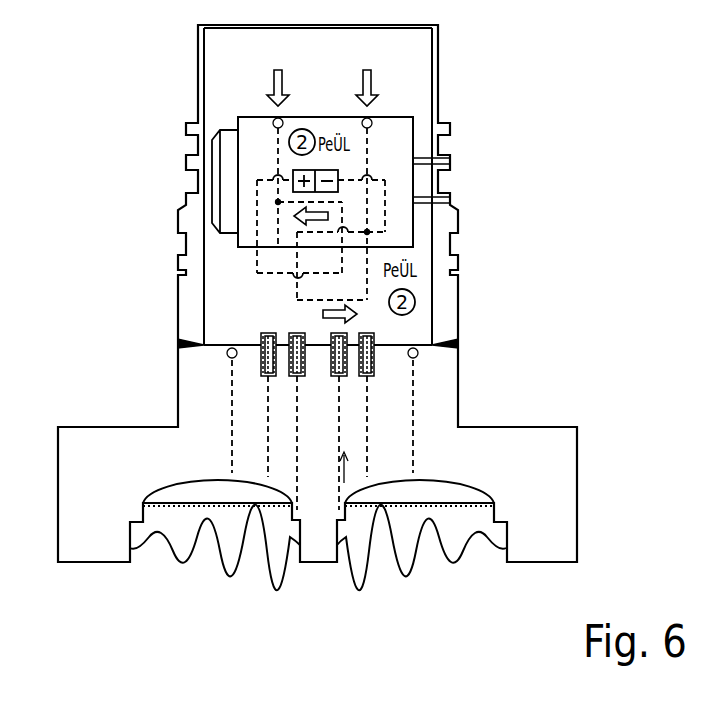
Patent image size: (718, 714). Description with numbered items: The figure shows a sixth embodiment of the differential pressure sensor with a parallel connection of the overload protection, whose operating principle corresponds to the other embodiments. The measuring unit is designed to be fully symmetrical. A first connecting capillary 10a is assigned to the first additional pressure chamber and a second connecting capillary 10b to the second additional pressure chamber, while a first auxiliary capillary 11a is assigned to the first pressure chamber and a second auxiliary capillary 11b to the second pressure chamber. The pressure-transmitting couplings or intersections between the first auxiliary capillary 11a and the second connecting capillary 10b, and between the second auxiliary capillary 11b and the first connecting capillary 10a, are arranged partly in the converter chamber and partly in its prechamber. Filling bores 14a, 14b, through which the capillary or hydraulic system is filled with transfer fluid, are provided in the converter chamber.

The first connecting capillary 10a is at (267, 398).
The second connecting capillary 10b is at (366, 398).
The filling bore 14a is at (232, 452).
The filling bore 14b is at (413, 452).
The first auxiliary capillary 11a is at (300, 509).
The second auxiliary capillary 11b is at (350, 509).